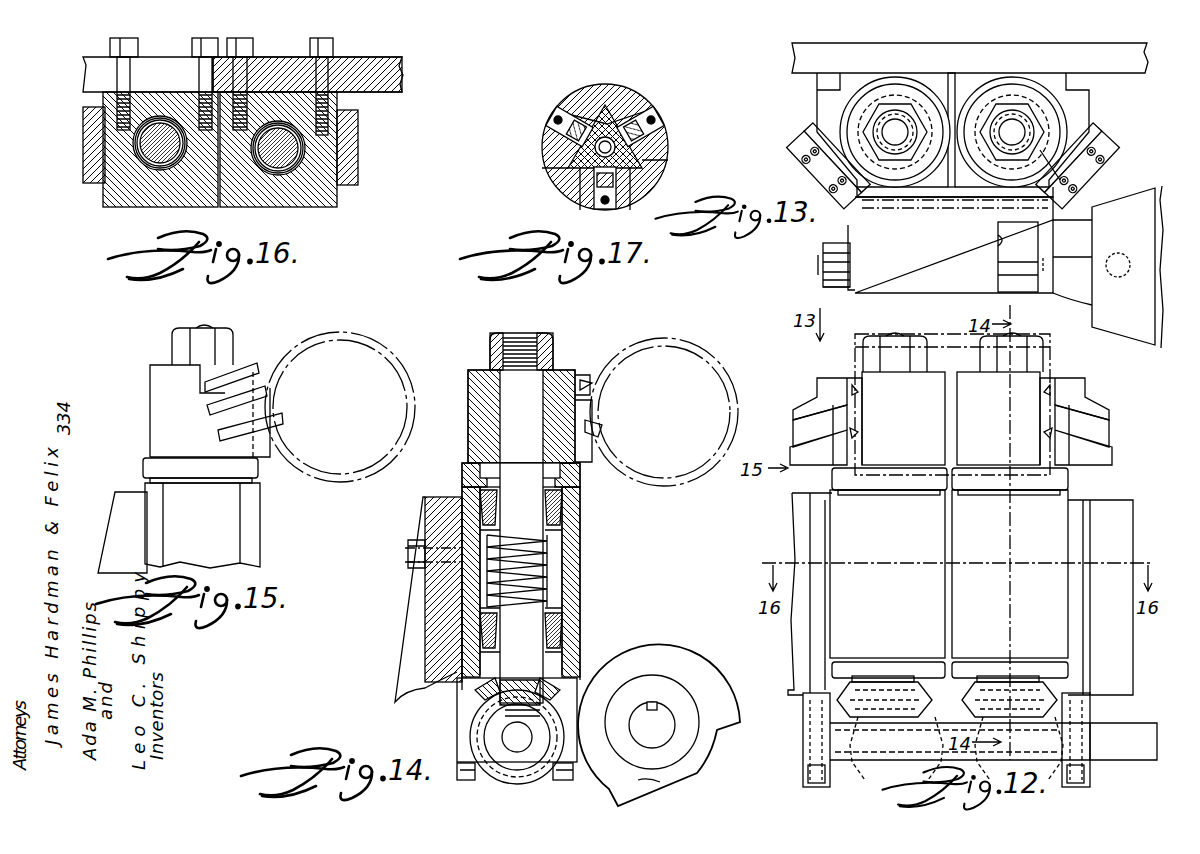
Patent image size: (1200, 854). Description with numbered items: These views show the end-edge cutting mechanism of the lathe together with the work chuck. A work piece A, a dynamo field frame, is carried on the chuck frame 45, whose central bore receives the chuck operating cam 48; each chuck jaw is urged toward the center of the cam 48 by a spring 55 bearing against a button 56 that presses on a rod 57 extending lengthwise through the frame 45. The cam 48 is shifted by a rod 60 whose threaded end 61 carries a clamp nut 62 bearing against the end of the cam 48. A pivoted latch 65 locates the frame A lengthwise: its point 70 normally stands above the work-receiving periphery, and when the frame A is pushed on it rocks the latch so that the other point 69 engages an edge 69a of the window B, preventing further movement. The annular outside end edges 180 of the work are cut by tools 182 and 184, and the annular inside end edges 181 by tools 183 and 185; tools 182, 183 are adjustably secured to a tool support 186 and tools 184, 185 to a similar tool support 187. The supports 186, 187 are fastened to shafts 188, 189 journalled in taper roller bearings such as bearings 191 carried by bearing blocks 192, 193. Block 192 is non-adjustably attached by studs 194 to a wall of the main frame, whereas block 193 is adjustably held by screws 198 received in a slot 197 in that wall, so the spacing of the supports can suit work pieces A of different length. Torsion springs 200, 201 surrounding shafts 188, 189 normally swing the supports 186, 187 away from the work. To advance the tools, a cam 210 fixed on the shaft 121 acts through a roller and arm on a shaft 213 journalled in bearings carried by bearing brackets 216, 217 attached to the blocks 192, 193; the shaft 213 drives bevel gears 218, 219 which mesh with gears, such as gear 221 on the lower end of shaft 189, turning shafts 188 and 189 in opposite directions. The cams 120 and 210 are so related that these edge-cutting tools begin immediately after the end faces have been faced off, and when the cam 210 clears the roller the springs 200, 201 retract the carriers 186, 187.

In FIG. 16, the slot 197 is at (398, 74).
In FIG. 13, the slot 197 is at (810, 50).
In FIG. 14, the slot 197 is at (438, 500).
In FIG. 16, the bearing block 192 is at (108, 205).
In FIG. 13, the bearing block 192 is at (1075, 87).
In FIG. 12, the bearing block 192 is at (835, 518).
In FIG. 15, the bearing block 192 is at (248, 516).
In FIG. 16, the bearing block 193 is at (337, 203).
In FIG. 13, the bearing block 193 is at (1015, 117).
In FIG. 12, the bearing block 193 is at (1062, 520).
In FIG. 16, the bearing bracket 216 is at (88, 142).
In FIG. 16, the bearing bracket 217 is at (350, 130).
In FIG. 16, the screws 198 is at (110, 48).
In FIG. 15, the screws 198 is at (125, 538).
In FIG. 16, the studs 194 is at (254, 42).
In FIG. 14, the studs 194 is at (408, 558).
In FIG. 16, the shaft 188 is at (160, 150).
In FIG. 13, the shaft 188 is at (895, 132).
In FIG. 12, the shaft 188 is at (892, 340).
In FIG. 14, the shaft 188 is at (520, 333).
In FIG. 15, the shaft 188 is at (216, 328).
In FIG. 16, the shaft 189 is at (283, 155).
In FIG. 13, the shaft 189 is at (1014, 132).
In FIG. 12, the shaft 189 is at (1020, 340).
In FIG. 16, the torsion spring 201 is at (303, 146).
In FIG. 14, the torsion spring 201 is at (547, 560).
In FIG. 16, the torsion spring 200 is at (148, 165).
In FIG. 17, the chuck frame 45 is at (592, 100).
In FIG. 17, the chuck operating cam 48 is at (640, 160).
In FIG. 17, the rod 60 is at (585, 158).
In FIG. 17, the button 56 is at (548, 135).
In FIG. 17, the spring 55 is at (566, 118).
In FIG. 17, the rod 57 is at (552, 121).
In FIG. 13, the tool support 186 is at (868, 90).
In FIG. 12, the tool support 186 is at (928, 385).
In FIG. 15, the tool support 186 is at (158, 375).
In FIG. 13, the tool support 187 is at (1025, 88).
In FIG. 12, the tool support 187 is at (1043, 385).
In FIG. 14, the tool support 187 is at (560, 380).
In FIG. 13, the tool 182 is at (800, 138).
In FIG. 12, the tool 182 is at (860, 392).
In FIG. 14, the tool 182 is at (583, 418).
In FIG. 15, the tool 182 is at (268, 378).
In FIG. 13, the tool 183 is at (792, 149).
In FIG. 12, the tool 183 is at (858, 432).
In FIG. 14, the tool 183 is at (593, 428).
In FIG. 15, the tool 183 is at (283, 421).
In FIG. 13, the tool 184 is at (1098, 138).
In FIG. 12, the tool 184 is at (1044, 395).
In FIG. 13, the tool 185 is at (1112, 150).
In FIG. 12, the tool 185 is at (1046, 436).
In FIG. 13, the annular outside end edges 180 is at (1063, 151).
In FIG. 13, the annular inside end edges 181 is at (1050, 204).
In FIG. 13, the dynamo field frame A is at (1055, 255).
In FIG. 14, the dynamo field frame A is at (712, 356).
In FIG. 15, the dynamo field frame A is at (390, 356).
In FIG. 13, the window B is at (1040, 238).
In FIG. 13, the edge of window 69a is at (1000, 238).
In FIG. 13, the latch end point 69 is at (1000, 258).
In FIG. 13, the pivoted latch 65 is at (1018, 268).
In FIG. 13, the latch end point 70 is at (1040, 266).
In FIG. 13, the threaded end 61 is at (822, 258).
In FIG. 13, the clamp nut 62 is at (822, 283).
In FIG. 12, the bevel gear 219 is at (840, 785).
In FIG. 12, the bevel gear 218 is at (1040, 788).
In FIG. 12, the shaft 213 is at (1145, 726).
In FIG. 14, the shaft 213 is at (517, 745).
In FIG. 14, the taper roller bearings 191 is at (555, 512).
In FIG. 14, the gear 221 is at (478, 690).
In FIG. 14, the cam 120 is at (722, 727).
In FIG. 14, the shaft 121 is at (642, 712).
In FIG. 14, the cam 210 is at (650, 783).